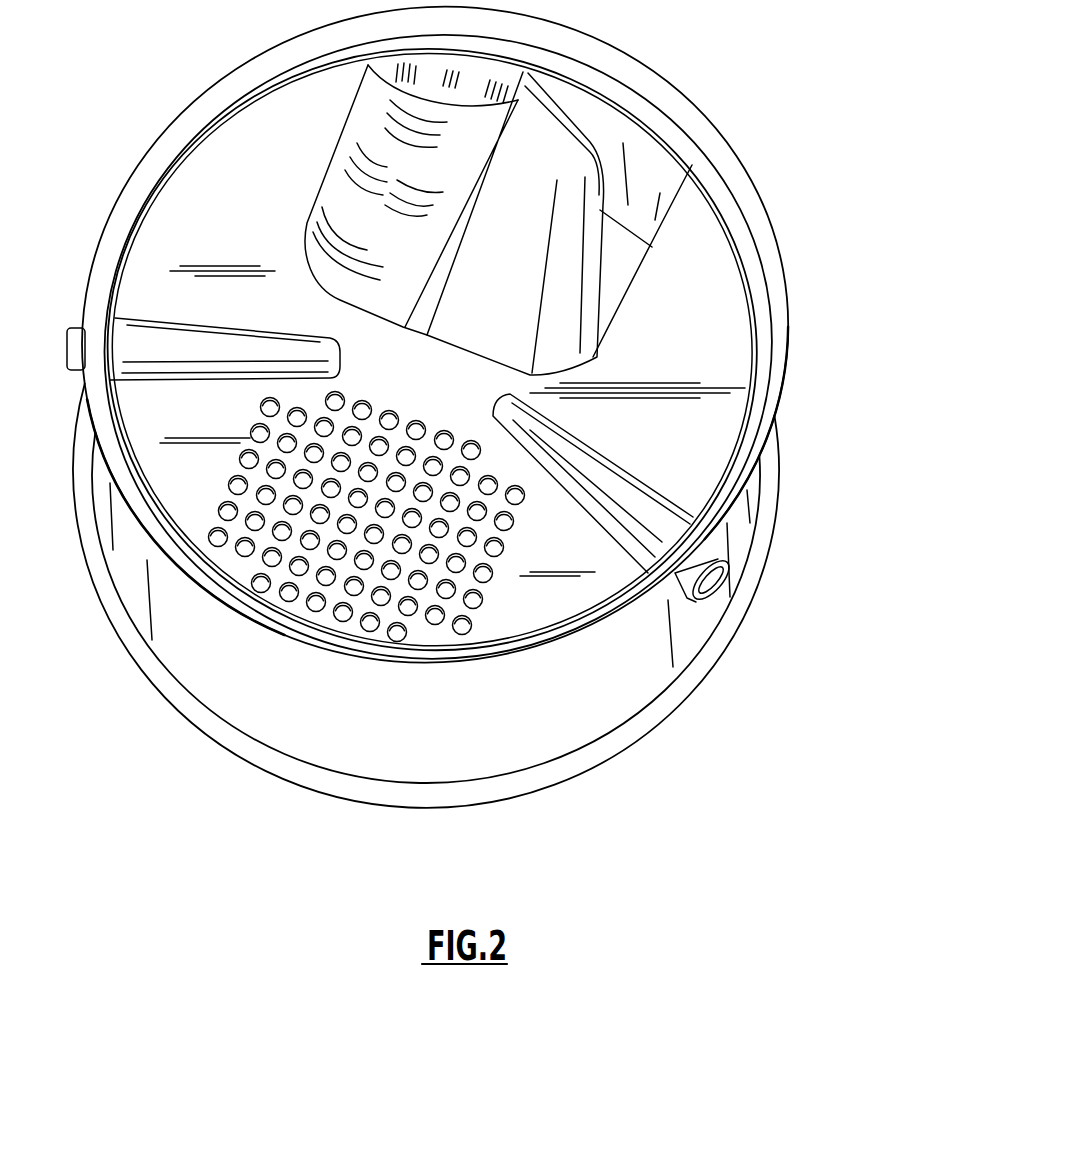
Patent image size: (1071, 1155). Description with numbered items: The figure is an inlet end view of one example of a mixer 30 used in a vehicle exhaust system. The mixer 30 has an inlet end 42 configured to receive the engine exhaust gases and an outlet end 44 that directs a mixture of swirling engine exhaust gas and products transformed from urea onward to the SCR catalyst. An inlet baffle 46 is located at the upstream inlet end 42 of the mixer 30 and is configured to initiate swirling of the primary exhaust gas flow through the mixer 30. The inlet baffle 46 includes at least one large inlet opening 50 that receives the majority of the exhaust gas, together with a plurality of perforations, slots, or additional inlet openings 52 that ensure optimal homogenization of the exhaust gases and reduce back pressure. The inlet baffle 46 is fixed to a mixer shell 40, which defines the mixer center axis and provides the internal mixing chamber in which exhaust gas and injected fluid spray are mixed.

The mixer 30 is at (482, 410).
The mixer shell 40 is at (567, 732).
The inlet end 42 is at (778, 340).
The outlet end 44 is at (682, 707).
The inlet baffle 46 is at (688, 313).
The large inlet opening 50 is at (625, 280).
The additional inlet openings 52 is at (243, 547).